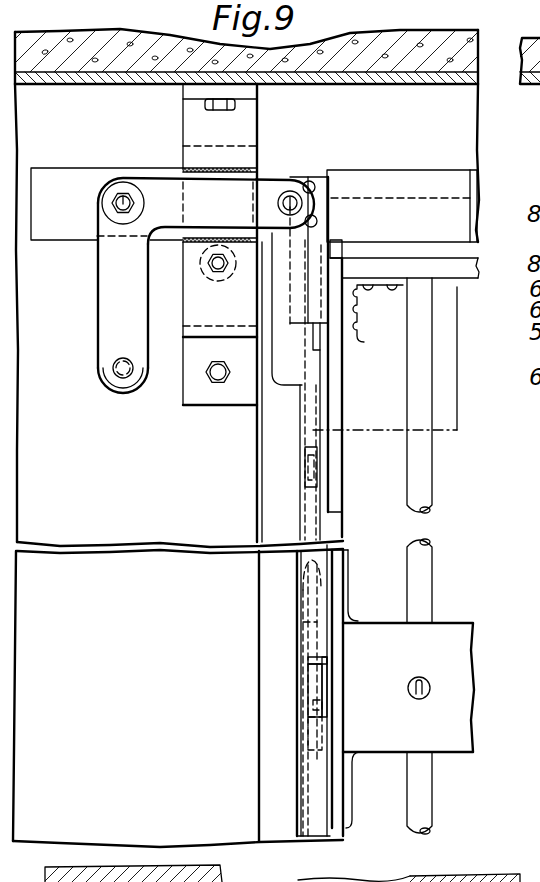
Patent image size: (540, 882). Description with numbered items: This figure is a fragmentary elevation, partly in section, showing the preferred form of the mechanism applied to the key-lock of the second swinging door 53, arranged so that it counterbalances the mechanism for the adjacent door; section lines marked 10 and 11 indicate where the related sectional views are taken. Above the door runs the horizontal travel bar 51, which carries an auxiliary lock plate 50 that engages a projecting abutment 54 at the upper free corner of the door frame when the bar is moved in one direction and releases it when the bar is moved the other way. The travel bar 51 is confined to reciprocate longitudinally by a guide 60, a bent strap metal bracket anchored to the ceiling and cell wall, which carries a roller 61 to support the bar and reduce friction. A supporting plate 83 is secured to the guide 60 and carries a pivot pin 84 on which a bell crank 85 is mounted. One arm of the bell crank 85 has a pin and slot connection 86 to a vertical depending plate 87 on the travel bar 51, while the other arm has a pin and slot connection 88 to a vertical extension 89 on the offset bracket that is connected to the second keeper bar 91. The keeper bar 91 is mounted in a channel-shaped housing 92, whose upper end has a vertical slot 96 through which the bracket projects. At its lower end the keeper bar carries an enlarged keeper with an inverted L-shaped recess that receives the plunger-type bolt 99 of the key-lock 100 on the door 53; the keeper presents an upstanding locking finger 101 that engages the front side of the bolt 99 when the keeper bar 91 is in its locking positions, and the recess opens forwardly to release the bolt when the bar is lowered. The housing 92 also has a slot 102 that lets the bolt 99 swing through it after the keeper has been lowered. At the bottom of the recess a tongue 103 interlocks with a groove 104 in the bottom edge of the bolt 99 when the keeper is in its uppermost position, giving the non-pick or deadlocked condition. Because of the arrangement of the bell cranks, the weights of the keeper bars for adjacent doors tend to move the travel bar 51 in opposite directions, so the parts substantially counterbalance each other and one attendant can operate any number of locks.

The section line 10- 10 is at (438, 14).
The section line 11- 11 is at (30, 13).
The plate 50 is at (322, 234).
The horizontal travel bar 51 is at (410, 174).
The swinging door 53 is at (472, 270).
The projecting abutment 54 is at (378, 288).
The guide 60 is at (247, 120).
The roller 61 is at (214, 282).
The supporting plate 83 is at (161, 178).
The pivot pin 84 is at (121, 194).
The bell crank 85 is at (116, 296).
The pin and slot connection 86 is at (130, 380).
The vertical depending plate 87 is at (100, 361).
The pin and slot connection 88 is at (292, 198).
The vertical extension 89 is at (278, 334).
The keeper bar 91 is at (313, 478).
The housing 92 is at (310, 797).
The vertical slot 96 is at (320, 458).
The plunger-type bolt 99 is at (326, 677).
The key-lock 100 is at (468, 619).
The locking finger 101 is at (312, 688).
The slot 102 is at (312, 658).
The tongue 103 is at (330, 745).
The groove 104 is at (321, 705).